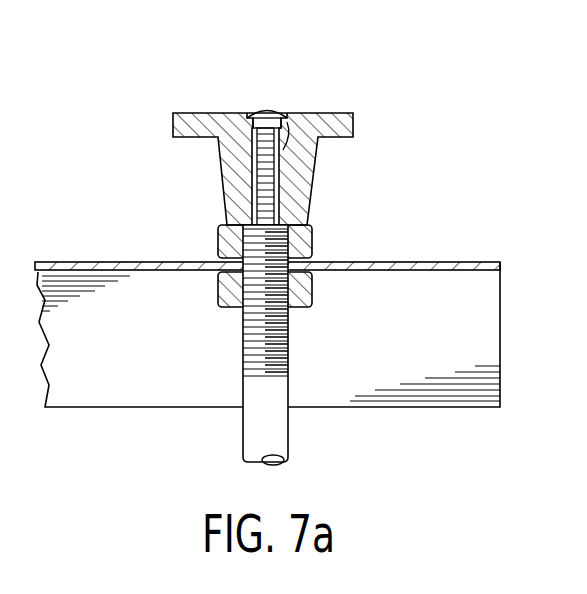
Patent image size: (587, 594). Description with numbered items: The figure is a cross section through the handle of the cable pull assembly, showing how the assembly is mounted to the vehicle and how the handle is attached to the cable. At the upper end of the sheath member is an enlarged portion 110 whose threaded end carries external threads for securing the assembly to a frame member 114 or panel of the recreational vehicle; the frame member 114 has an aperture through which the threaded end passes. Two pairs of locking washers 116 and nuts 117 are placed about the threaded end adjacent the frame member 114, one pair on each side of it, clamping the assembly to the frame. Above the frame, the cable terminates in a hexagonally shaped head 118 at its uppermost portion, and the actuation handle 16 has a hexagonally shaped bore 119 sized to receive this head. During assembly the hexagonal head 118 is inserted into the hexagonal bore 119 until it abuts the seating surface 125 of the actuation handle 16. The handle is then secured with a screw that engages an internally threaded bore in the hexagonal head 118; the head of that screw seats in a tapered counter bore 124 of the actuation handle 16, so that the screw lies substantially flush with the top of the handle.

The actuation handle 16 is at (205, 113).
The enlarged portion 110 is at (277, 430).
The frame member 114 is at (77, 393).
The locking washers 116 is at (216, 258).
The nuts 117 is at (310, 239).
The hexagonally shaped head 118 is at (311, 176).
The hexagonally shaped bore 119 is at (257, 150).
The tapered counter bore 124 is at (258, 108).
The seating surface 125 is at (290, 146).